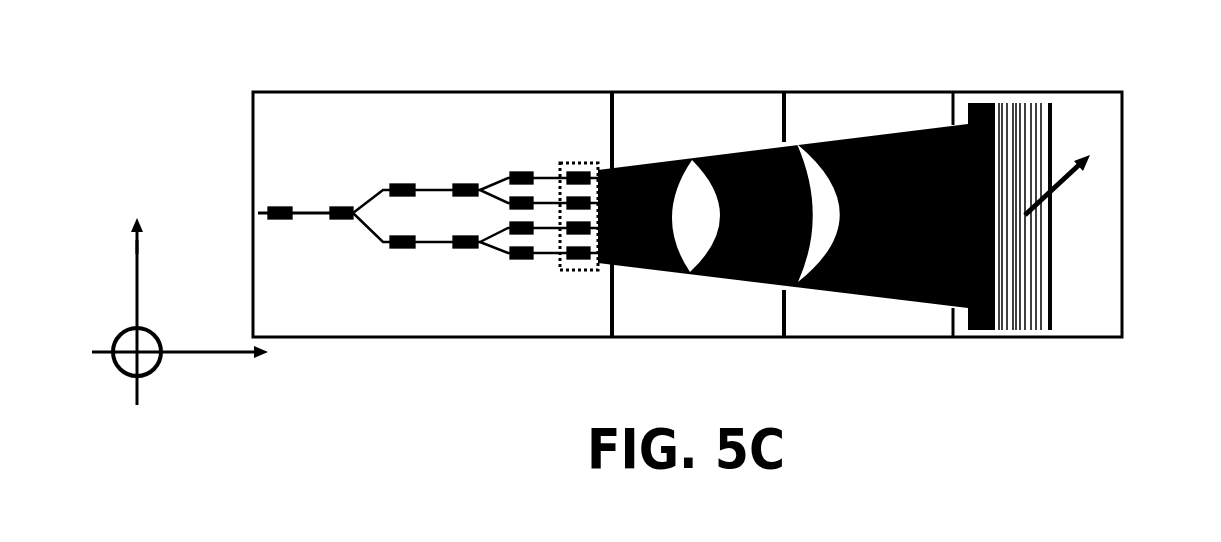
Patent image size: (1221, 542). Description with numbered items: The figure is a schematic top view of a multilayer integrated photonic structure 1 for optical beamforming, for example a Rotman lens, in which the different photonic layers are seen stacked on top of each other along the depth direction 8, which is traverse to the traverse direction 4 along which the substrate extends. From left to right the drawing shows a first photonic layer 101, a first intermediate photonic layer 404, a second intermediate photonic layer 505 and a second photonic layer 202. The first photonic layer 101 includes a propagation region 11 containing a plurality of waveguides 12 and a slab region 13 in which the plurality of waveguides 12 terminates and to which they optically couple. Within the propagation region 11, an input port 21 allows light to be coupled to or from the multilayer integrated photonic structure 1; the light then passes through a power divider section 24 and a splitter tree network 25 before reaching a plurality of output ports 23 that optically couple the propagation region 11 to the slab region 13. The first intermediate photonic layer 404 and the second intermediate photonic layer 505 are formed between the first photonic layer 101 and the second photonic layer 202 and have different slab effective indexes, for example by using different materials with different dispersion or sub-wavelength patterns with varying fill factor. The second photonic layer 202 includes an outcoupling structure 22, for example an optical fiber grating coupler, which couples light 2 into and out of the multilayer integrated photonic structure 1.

The multilayer integrated photonic structure 1 is at (218, 181).
The light 2 is at (1090, 157).
The traverse direction 4 is at (137, 247).
The depth direction 8 is at (112, 332).
The propagation region 11 is at (440, 320).
The plurality of waveguides 12 is at (445, 226).
The slab region 13 is at (601, 160).
The input port 21 is at (281, 229).
The outcoupling structure 22 is at (1042, 249).
The plurality of output ports 23 is at (569, 279).
The power divider section 24 is at (346, 200).
The splitter tree network 25 is at (483, 166).
The first photonic layer 101 is at (399, 91).
The second photonic layer 202 is at (1045, 91).
The first intermediate photonic layer 404 is at (697, 91).
The second intermediate photonic layer 505 is at (862, 91).